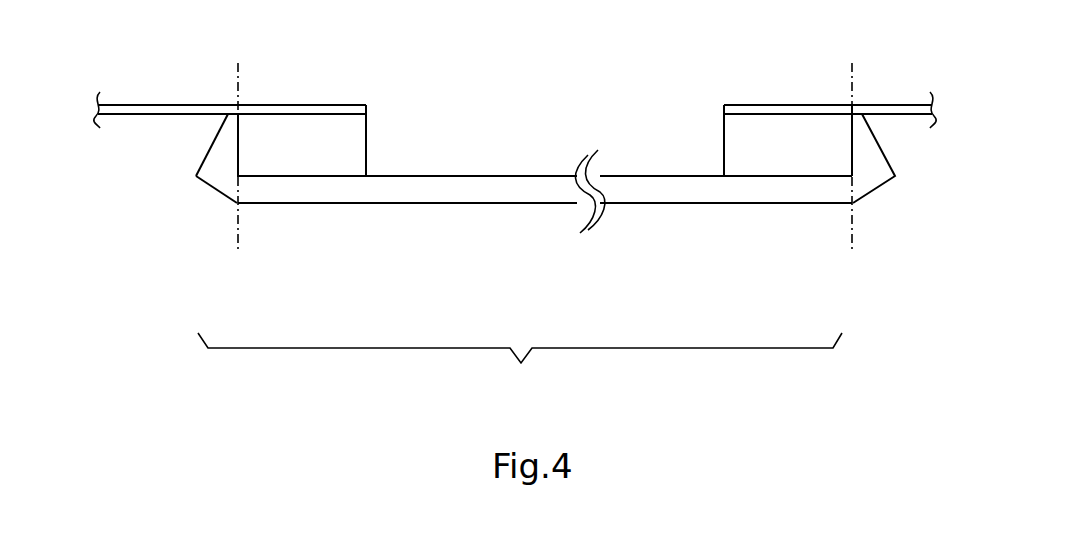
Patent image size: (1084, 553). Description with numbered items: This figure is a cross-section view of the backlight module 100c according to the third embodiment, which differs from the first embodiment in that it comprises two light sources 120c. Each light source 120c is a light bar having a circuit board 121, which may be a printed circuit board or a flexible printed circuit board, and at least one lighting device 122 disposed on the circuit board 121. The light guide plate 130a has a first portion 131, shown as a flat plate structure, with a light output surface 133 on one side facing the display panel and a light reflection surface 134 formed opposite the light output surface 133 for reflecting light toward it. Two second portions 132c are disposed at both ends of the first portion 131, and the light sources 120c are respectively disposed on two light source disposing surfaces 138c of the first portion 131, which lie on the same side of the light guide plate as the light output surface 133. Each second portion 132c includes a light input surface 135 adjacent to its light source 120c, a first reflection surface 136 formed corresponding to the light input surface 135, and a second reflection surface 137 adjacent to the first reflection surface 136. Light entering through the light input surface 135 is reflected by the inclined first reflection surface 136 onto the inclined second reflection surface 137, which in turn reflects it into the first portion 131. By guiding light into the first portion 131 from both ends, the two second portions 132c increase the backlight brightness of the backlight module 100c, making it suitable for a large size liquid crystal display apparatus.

The backlight module 100c is at (883, 72).
The light source 120c is at (325, 85).
The circuit board 121 is at (145, 110).
The lighting device 122 is at (293, 130).
The frame 130a is at (520, 364).
The first portion 131 is at (528, 221).
The second portion 132c is at (212, 222).
The light output surface 133 is at (643, 175).
The light reflection surface 134 is at (650, 207).
The light input surface 135 is at (239, 150).
The first reflection surface 136 is at (210, 145).
The second reflection surface 137 is at (225, 197).
The light source disposing surface 138c is at (325, 175).